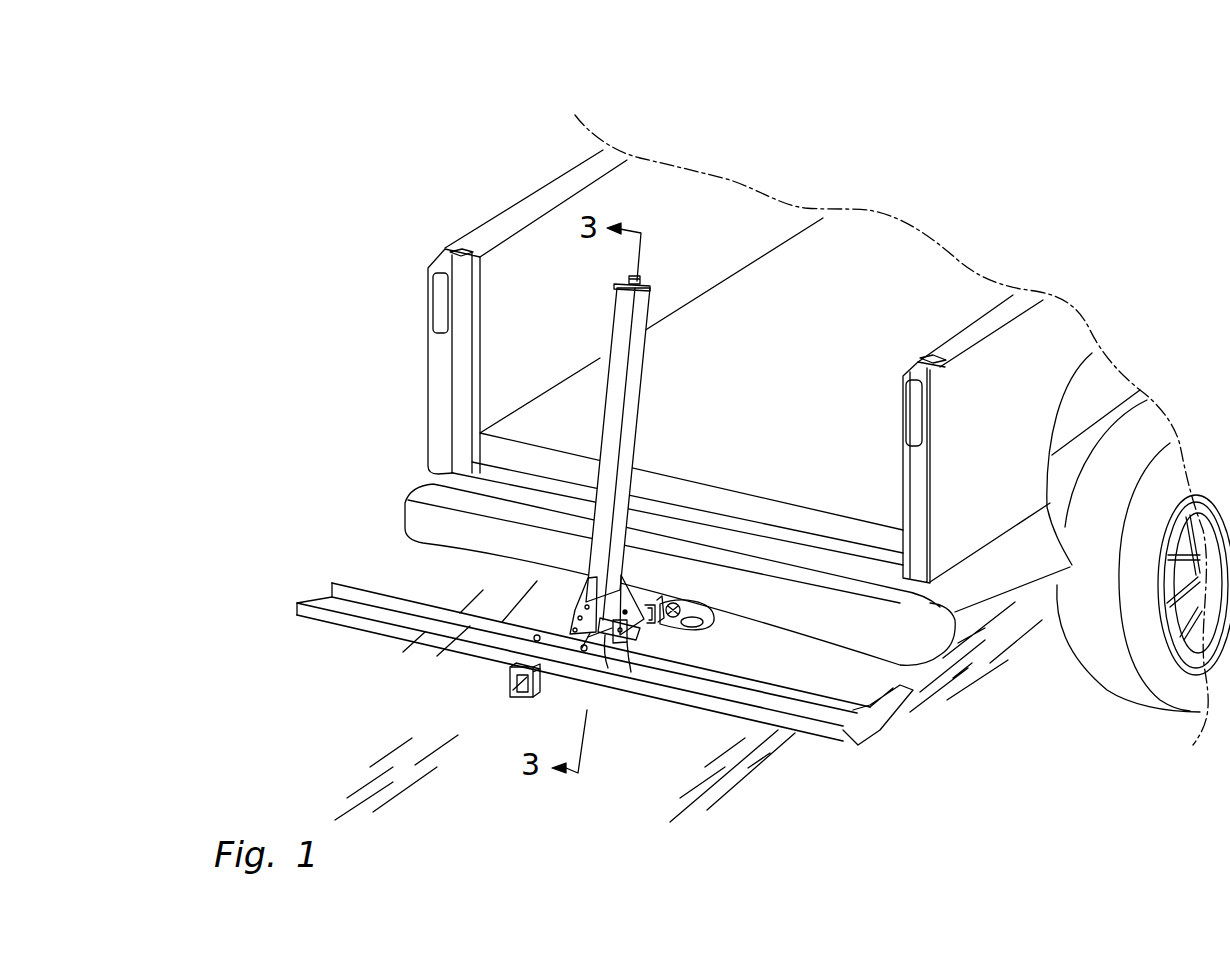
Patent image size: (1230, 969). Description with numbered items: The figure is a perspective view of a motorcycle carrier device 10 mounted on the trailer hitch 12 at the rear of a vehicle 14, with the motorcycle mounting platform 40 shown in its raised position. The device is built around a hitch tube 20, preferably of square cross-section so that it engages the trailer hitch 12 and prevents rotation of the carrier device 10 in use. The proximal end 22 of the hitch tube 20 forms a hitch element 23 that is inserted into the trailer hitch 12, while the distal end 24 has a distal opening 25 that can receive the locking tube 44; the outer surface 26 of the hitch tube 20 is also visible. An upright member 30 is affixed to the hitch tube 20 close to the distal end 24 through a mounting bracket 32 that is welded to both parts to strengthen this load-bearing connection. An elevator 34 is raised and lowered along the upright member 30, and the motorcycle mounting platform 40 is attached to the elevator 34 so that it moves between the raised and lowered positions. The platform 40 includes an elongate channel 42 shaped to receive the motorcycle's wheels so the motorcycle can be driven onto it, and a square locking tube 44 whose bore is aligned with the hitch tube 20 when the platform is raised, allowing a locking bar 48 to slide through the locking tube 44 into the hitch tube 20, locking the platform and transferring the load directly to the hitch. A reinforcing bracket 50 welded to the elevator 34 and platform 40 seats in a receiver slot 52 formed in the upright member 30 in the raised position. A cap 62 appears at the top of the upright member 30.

The motorcycle carrier device 10 is at (733, 477).
The trailer hitch 12 is at (658, 600).
The vehicle 14 is at (820, 625).
The hitch tube 20 is at (643, 632).
The proximal end 22 is at (722, 626).
The hitch element 23 is at (700, 629).
The distal end 24 is at (621, 655).
The distal opening 25 is at (602, 645).
The outer surface 26 is at (658, 600).
The upright member 30 is at (641, 353).
The mounting bracket 32 is at (626, 575).
The elevator 34 is at (592, 658).
The motorcycle mounting platform 40 is at (510, 672).
The elongate channel 42 is at (431, 610).
The locking tube 44 is at (543, 688).
The locking bar 48 is at (513, 690).
The reinforcing bracket 50 is at (580, 628).
The receiver slot 52 is at (592, 582).
The top stud / cap 62 is at (645, 277).